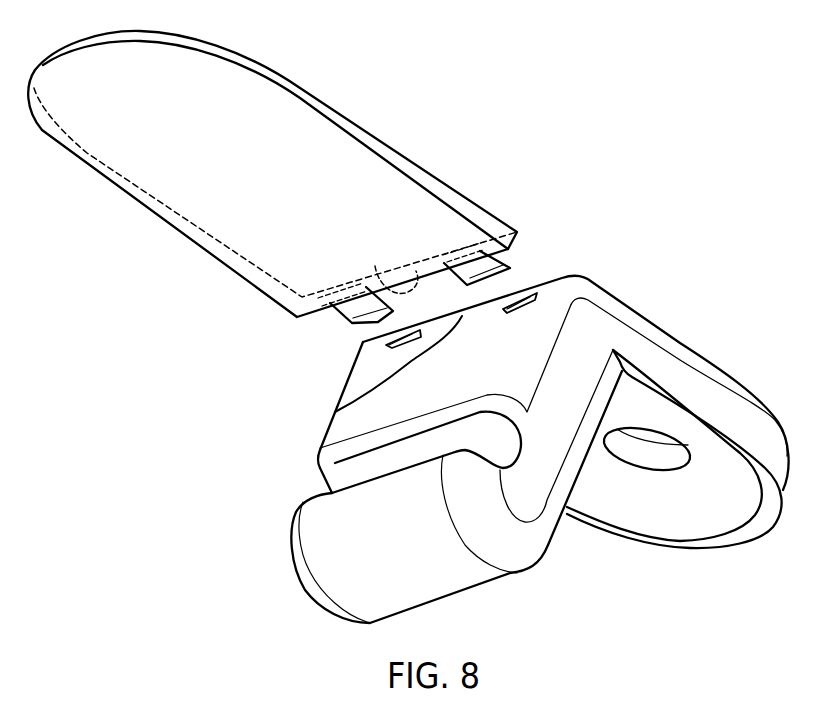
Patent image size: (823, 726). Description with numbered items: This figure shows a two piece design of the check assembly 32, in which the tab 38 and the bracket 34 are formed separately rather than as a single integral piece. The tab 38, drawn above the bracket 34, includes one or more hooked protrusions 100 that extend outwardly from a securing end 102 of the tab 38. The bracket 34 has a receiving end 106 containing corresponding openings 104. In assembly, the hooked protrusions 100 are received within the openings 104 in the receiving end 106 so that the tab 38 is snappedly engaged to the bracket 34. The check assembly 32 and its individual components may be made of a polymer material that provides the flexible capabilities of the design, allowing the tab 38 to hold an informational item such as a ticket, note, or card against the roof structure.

The check assembly 32 is at (727, 217).
The bracket 34 is at (687, 378).
The tab 38 is at (340, 115).
The hooked protrusions 100 is at (348, 313).
The securing end 102 is at (383, 270).
The openings 104 is at (385, 346).
The receiving end 106 is at (340, 403).